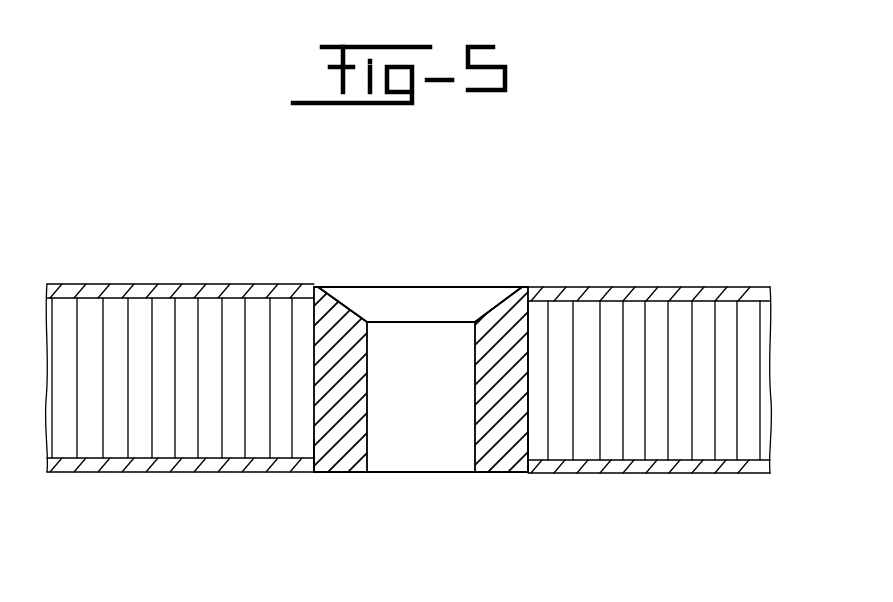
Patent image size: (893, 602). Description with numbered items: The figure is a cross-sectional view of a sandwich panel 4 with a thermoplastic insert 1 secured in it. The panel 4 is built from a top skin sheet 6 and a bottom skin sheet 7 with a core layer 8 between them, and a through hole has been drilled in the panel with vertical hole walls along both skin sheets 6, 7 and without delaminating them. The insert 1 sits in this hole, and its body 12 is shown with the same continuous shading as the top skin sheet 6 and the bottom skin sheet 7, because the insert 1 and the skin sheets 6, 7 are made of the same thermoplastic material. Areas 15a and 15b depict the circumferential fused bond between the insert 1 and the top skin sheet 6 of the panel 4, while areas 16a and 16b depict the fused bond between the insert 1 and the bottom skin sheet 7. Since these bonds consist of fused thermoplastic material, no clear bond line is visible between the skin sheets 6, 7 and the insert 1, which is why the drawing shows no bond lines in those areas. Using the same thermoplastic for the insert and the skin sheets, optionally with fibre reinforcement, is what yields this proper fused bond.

The insert 1 is at (439, 272).
The panel 4 is at (128, 272).
The top skin sheet 6 is at (723, 293).
The bottom skin sheet 7 is at (718, 468).
The core layer 8 is at (658, 308).
The body 12 is at (503, 436).
The area 15a is at (307, 285).
The area 15b is at (522, 287).
The area 16a is at (322, 468).
The area 16b is at (531, 470).